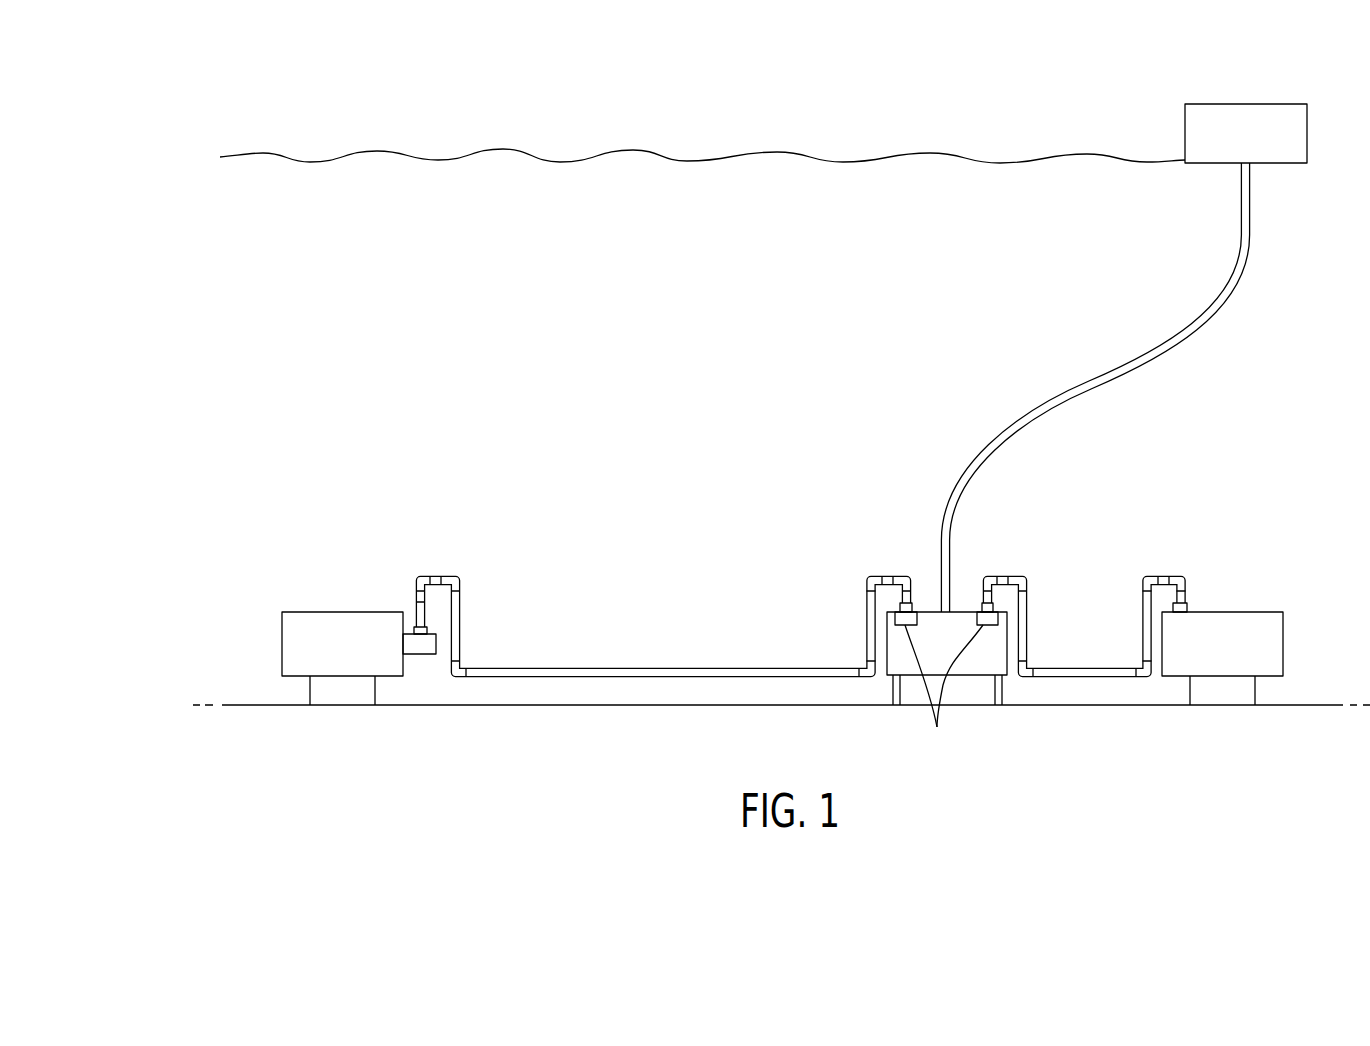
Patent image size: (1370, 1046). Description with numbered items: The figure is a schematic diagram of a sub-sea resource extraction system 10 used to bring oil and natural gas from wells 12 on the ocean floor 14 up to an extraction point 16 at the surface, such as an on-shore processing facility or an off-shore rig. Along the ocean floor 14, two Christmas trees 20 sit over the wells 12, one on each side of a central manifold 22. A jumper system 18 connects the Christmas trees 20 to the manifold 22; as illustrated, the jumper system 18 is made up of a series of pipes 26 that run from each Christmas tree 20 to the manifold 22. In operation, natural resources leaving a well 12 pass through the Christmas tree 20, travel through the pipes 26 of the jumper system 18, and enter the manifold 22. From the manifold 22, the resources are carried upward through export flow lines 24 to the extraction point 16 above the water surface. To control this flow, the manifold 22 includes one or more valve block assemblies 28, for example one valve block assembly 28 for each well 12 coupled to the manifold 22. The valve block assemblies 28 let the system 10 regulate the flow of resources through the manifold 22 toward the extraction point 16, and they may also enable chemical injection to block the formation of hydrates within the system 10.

The sub-sea resource extraction system 10 is at (287, 114).
The well 12 is at (246, 679).
The ocean floor 14 is at (783, 705).
The extraction point 16 is at (1247, 104).
The jumper system 18 is at (801, 631).
The Christmas tree 20 is at (342, 612).
The manifold 22 is at (972, 675).
The export flow line 24 is at (1089, 383).
The pipe 26 is at (660, 677).
The valve block assembly 28 is at (944, 693).